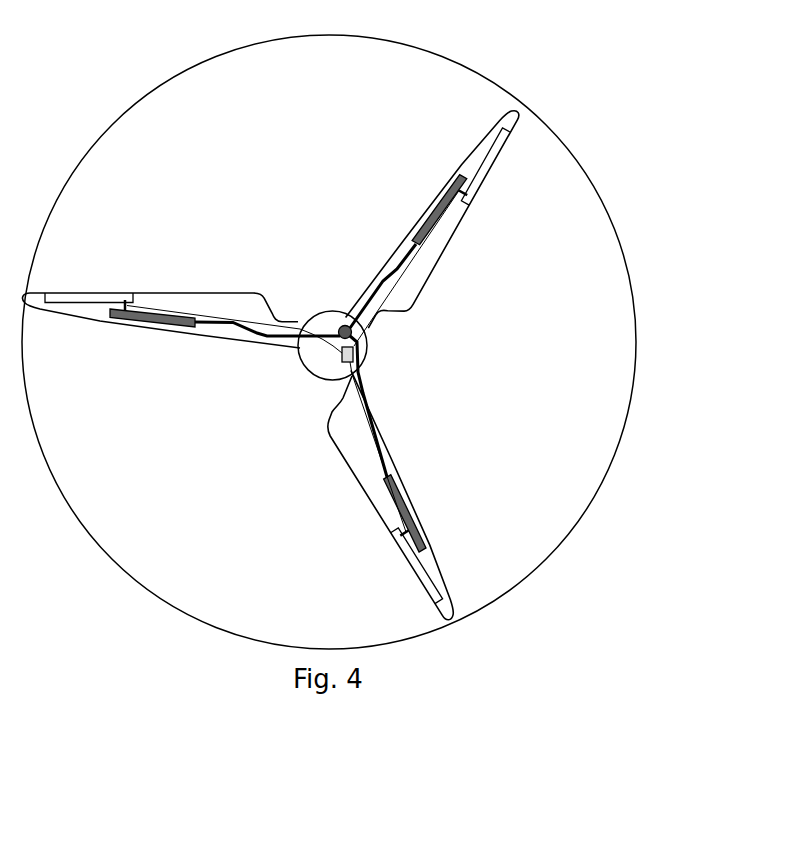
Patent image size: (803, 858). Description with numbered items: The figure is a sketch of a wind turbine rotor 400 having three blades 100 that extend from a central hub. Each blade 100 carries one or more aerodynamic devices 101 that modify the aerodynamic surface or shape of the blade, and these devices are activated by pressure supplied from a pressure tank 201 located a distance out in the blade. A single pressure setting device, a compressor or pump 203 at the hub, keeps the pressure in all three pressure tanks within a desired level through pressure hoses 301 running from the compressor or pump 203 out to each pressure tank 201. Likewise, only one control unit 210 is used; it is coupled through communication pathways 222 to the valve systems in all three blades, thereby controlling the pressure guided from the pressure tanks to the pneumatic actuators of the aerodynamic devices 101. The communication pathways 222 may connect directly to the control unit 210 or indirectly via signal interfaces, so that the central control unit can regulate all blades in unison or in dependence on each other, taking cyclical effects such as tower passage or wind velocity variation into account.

The blade 100 is at (200, 298).
The aerodynamic device 101 is at (402, 494).
The pressure tank 201 is at (407, 495).
The compressor or pump 203 is at (343, 327).
The control unit 210 is at (345, 357).
The communication pathway 222 is at (417, 267).
The pressure hose 301 is at (379, 282).
The wind turbine rotor 400 is at (565, 483).